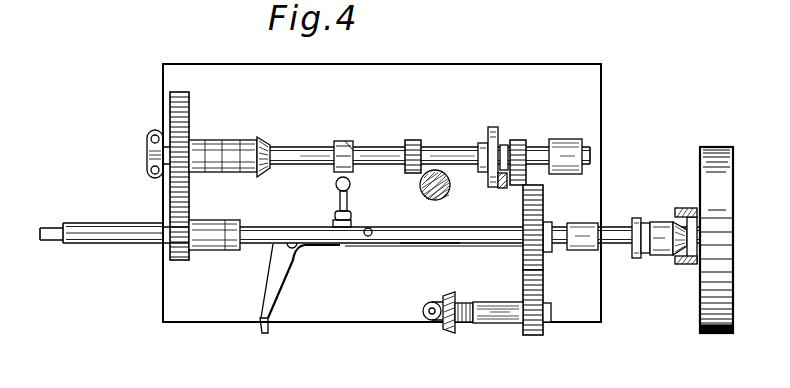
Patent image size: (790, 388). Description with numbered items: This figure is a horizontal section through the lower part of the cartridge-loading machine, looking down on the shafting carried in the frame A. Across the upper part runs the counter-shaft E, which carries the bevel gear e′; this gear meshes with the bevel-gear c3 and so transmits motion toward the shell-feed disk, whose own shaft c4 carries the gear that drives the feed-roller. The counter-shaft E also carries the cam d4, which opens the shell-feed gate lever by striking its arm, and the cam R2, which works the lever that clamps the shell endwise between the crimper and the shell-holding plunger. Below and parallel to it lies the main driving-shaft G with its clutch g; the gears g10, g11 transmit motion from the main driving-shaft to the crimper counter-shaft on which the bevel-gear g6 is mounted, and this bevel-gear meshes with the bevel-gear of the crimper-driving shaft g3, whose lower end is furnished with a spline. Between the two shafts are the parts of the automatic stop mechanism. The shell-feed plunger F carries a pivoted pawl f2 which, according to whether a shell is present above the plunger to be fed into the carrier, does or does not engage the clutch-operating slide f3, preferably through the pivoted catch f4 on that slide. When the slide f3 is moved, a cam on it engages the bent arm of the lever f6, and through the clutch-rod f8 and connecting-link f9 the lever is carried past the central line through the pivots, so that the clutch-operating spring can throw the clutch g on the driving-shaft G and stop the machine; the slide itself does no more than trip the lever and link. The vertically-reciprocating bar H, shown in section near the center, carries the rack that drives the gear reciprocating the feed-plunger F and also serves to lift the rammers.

The counter-shaft E is at (297, 147).
The bevel gear e′ is at (262, 139).
The cam d4 is at (345, 143).
The frame A is at (395, 101).
The cam R2 is at (420, 142).
The pawl f2 is at (490, 127).
The bevel-gear c3 is at (501, 189).
The shaft of the feed-disk c4 is at (523, 147).
The vertically-reciprocating bar H is at (448, 193).
The main driving-shaft G is at (263, 236).
The gear g10 is at (523, 258).
The gear g11 is at (527, 336).
The shell-feed plunger F is at (351, 187).
The pivoted catch f4 is at (340, 202).
The clutch-operating slide f3 is at (349, 214).
The lever f6 is at (278, 272).
The connecting-link f9 is at (387, 250).
The clutch-rod f8 is at (443, 248).
The clutch g is at (674, 258).
The crimper-driving shaft g3 is at (430, 318).
The bevel-gear g6 is at (452, 330).